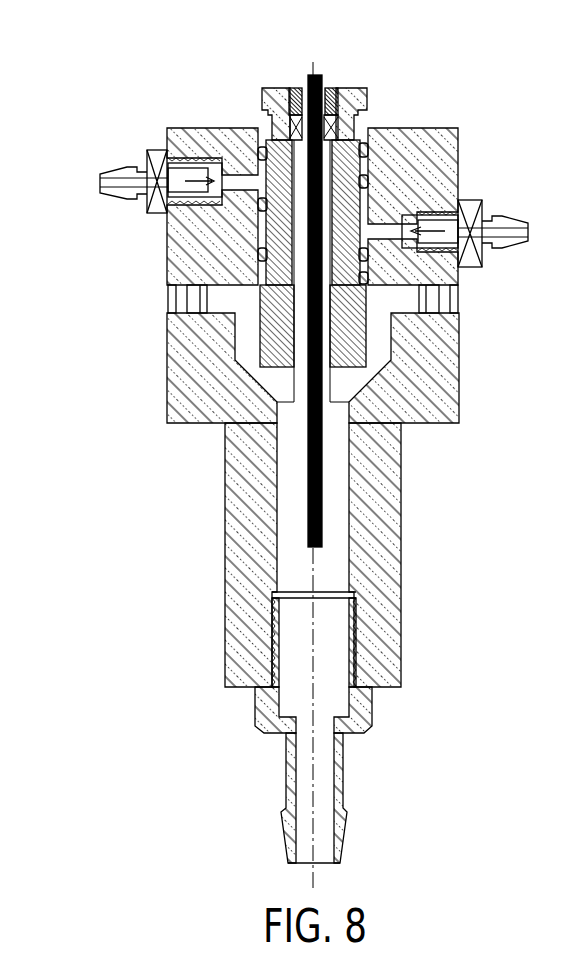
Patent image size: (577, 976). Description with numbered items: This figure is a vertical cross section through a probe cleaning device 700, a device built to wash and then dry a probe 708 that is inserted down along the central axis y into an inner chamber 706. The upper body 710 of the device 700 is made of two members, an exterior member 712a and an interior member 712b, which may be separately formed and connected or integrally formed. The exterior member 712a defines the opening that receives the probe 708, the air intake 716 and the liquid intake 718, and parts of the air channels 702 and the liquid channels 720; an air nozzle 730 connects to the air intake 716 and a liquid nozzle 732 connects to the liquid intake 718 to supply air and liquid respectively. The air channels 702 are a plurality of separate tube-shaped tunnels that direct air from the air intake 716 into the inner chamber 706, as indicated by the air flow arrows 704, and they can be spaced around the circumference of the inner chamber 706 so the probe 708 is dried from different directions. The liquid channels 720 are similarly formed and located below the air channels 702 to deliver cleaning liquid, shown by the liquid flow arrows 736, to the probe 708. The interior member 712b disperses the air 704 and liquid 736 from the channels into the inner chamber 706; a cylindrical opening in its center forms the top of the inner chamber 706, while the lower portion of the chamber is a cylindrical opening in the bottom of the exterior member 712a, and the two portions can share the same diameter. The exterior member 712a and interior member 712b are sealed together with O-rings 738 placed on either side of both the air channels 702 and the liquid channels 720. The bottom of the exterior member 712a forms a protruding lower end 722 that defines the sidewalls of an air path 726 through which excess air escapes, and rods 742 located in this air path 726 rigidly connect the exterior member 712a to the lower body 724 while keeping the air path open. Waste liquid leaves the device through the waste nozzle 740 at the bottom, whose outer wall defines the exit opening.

The probe cleaning device 700 is at (125, 112).
The air channels 702 is at (238, 180).
The air flow arrows 704 is at (190, 176).
The inner chamber 706 is at (368, 212).
The probe 708 is at (262, 252).
The upper body 710 is at (172, 268).
The exterior member 712a is at (431, 129).
The interior member 712b is at (400, 316).
The air intake 716 is at (163, 166).
The liquid intake 718 is at (475, 253).
The liquid channels 720 is at (438, 228).
The protruding lower end 722 is at (366, 330).
The lower body 724 is at (383, 527).
The air path 726 is at (432, 424).
The air nozzle 730 is at (152, 193).
The liquid nozzle 732 is at (480, 209).
The liquid flow arrows 736 is at (458, 212).
The O-rings 738 is at (262, 147).
The waste nozzle 740 is at (370, 705).
The rods 742 is at (440, 300).
The longitudinal axis y is at (318, 850).